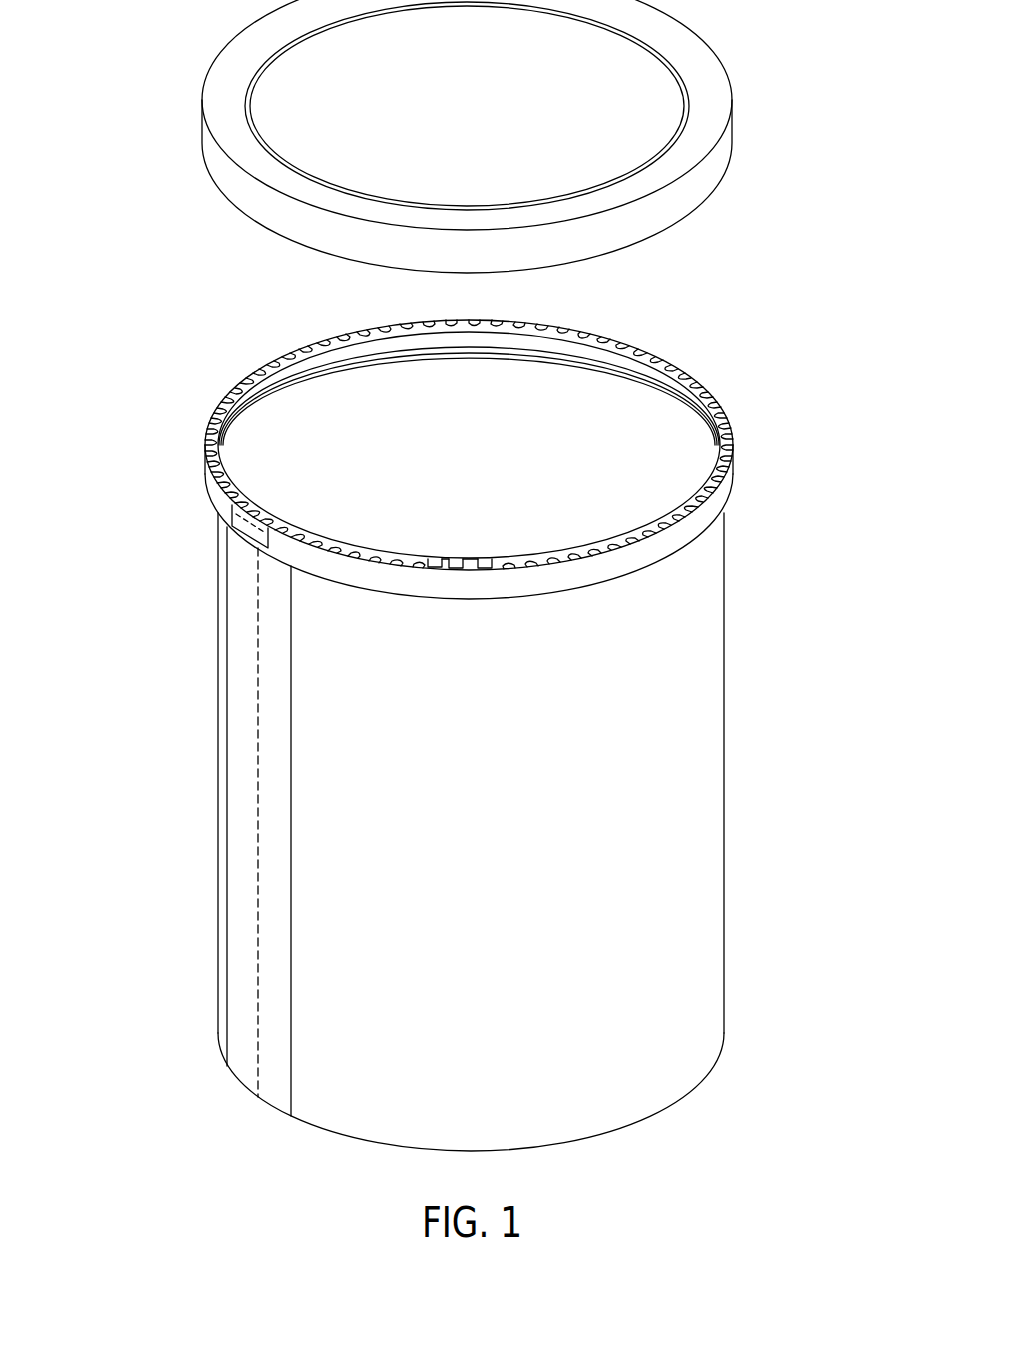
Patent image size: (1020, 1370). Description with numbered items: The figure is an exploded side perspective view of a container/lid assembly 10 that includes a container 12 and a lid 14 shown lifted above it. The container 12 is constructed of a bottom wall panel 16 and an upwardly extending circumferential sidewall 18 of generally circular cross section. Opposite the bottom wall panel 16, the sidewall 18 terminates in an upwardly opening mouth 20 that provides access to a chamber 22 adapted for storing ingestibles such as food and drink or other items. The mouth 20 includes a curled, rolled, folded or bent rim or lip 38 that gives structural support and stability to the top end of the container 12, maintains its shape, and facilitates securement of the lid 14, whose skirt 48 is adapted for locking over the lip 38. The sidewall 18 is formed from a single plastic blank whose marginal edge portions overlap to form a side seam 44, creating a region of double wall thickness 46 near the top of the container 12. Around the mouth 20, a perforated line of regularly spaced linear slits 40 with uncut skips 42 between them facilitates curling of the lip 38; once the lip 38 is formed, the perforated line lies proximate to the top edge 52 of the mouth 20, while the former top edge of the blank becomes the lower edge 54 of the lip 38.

The container/lid assembly 10 is at (145, 230).
The container 12 is at (202, 825).
The lid 14 is at (197, 71).
The bottom wall panel 16 is at (381, 1144).
The sidewall 18 is at (712, 680).
The mouth 20 is at (293, 349).
The chamber 22 is at (471, 401).
The lip 38 is at (713, 507).
The slits 40 is at (431, 561).
The skips 42 is at (444, 559).
The side seam 44 is at (274, 716).
The double wall thickness 46 is at (233, 530).
The skirt 48 is at (734, 138).
The top edge 52 is at (671, 355).
The lower edge 54 is at (594, 586).